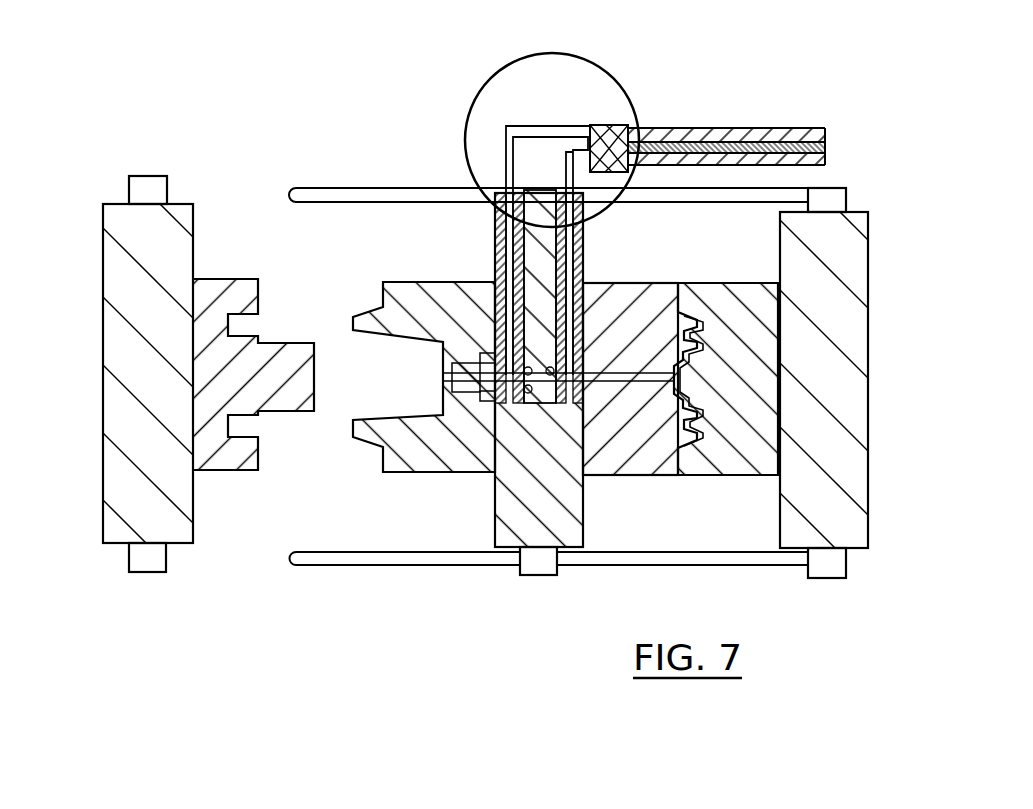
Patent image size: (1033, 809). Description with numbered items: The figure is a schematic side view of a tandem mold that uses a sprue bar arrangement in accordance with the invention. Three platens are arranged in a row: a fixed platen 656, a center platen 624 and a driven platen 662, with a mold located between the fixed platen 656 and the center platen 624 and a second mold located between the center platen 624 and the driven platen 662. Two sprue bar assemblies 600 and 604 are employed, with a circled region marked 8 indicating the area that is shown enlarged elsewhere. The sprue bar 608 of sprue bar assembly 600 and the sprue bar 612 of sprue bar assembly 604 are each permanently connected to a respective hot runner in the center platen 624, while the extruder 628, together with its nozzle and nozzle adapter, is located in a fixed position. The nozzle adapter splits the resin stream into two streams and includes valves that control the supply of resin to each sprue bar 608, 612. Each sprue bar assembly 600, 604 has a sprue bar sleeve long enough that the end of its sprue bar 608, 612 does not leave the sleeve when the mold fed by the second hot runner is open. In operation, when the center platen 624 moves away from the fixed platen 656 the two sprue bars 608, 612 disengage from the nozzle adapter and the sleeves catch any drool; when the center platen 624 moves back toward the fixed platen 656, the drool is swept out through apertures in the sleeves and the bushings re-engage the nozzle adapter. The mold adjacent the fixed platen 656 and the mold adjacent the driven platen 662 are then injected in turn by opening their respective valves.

The detail circle for FIG. 8 is at (474, 100).
The sprue bar assembly 600 is at (584, 124).
The sprue bar assembly 604 is at (572, 137).
The sprue bar 608 is at (505, 150).
The sprue bar 612 is at (566, 158).
The center platen 624 is at (495, 500).
The extruder 628 is at (740, 128).
The fixed platen 656 is at (865, 343).
The driven platen 662 is at (137, 371).